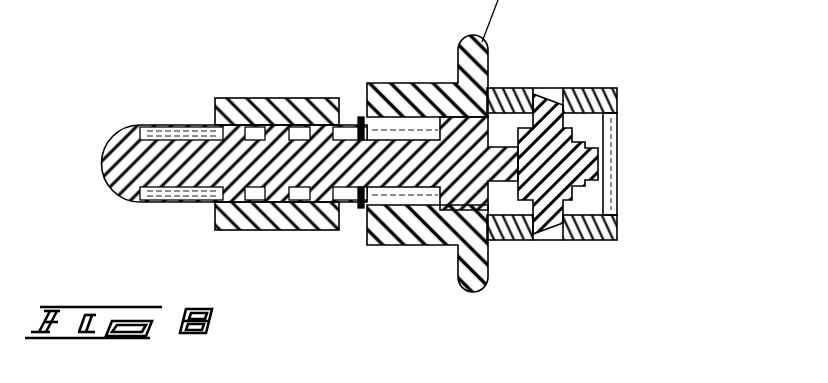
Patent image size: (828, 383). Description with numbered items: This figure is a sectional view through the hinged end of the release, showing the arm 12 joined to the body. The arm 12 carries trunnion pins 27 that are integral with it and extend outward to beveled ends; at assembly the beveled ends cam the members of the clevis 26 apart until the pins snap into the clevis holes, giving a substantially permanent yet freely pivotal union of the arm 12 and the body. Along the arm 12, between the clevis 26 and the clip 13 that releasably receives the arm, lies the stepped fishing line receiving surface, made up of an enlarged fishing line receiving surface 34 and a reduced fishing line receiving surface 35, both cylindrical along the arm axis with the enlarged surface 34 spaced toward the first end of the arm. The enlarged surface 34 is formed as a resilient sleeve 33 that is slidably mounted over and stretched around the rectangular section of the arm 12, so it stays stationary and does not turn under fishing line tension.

The arm 12 is at (177, 210).
The clip 13 is at (292, 240).
The clevis 26 is at (613, 82).
The trunnion pins 27 is at (555, 94).
The resilient sleeve 33 is at (441, 248).
The enlarged fishing line receiving surface 34 is at (413, 82).
The reduced fishing line receiving surface 35 is at (354, 209).